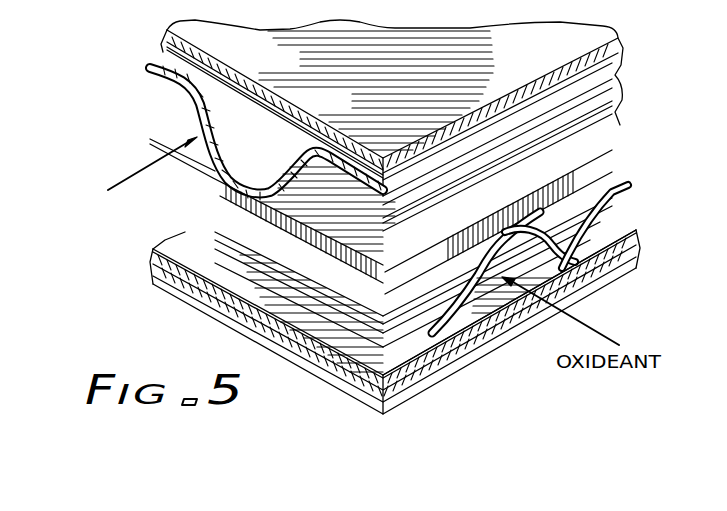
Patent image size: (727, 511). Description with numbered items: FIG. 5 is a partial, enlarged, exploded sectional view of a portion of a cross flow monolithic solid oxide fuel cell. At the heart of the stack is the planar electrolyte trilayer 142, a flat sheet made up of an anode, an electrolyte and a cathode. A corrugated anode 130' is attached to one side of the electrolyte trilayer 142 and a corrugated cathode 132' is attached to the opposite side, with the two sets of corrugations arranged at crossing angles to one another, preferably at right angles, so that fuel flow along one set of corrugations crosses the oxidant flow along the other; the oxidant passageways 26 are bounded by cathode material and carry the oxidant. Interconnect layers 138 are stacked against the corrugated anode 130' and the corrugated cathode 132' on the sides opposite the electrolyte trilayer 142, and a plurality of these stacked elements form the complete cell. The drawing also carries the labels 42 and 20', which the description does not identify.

The end interconnect plate 42 is at (165, 36).
The flat anode-electrolyte-cathode trilayer 20' is at (381, 172).
The corrugated anode 130' is at (272, 158).
The interconnect layer 138 is at (155, 184).
The electrolyte trilayer 142 is at (153, 251).
The corrugated cathode 132' is at (421, 301).
The oxidant passageway 26 is at (470, 336).